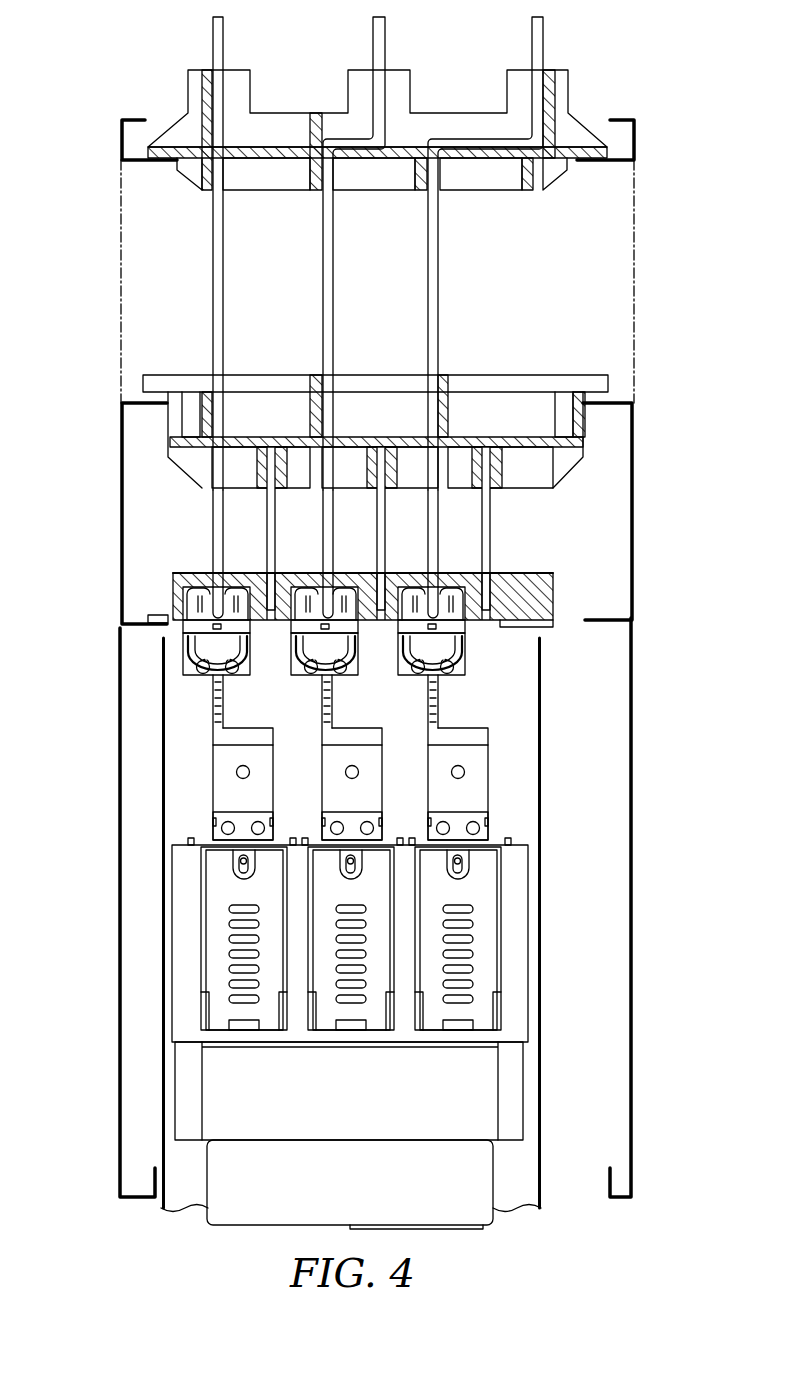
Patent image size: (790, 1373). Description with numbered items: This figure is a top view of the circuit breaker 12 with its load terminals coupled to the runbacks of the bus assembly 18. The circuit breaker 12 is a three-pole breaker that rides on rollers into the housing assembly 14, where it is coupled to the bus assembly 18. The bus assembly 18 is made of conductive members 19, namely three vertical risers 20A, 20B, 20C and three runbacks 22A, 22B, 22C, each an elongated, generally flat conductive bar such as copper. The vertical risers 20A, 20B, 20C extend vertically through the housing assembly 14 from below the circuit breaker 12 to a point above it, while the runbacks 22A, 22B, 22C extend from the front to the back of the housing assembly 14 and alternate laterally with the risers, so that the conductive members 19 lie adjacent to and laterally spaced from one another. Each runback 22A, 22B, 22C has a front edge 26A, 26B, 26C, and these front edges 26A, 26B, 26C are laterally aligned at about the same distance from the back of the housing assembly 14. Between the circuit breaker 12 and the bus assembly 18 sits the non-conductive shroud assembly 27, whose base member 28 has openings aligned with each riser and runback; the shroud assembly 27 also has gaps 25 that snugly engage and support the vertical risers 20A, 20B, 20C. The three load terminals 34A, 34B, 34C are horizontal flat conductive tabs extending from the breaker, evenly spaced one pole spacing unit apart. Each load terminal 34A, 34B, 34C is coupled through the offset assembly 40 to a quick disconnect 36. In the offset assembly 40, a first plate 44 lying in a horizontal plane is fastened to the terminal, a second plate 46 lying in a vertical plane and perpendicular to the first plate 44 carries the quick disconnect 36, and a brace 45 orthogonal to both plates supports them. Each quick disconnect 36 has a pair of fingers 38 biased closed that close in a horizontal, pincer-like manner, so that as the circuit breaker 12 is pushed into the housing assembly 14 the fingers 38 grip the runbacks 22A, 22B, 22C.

The circuit breaker 12 is at (183, 892).
The housing assembly 14 is at (632, 776).
The bus assembly 18 is at (110, 460).
The conductive members 19 is at (221, 286).
The vertical riser 20A is at (264, 500).
The vertical riser 20B is at (374, 500).
The vertical riser 20C is at (488, 538).
The runback 22A is at (213, 511).
The runback 22B is at (323, 528).
The runback 22C is at (429, 530).
The gaps 25 is at (262, 566).
The front edge 26A is at (228, 618).
The front edge 26B is at (324, 613).
The front edge 26C is at (433, 613).
The shroud assembly 27 is at (177, 575).
The base member 28 is at (158, 616).
The load terminal 34A is at (230, 809).
The load terminal 34B is at (359, 816).
The load terminal 34C is at (471, 820).
The quick disconnects 36 is at (188, 672).
The fingers 38 is at (190, 580).
The offset assembly 40 is at (272, 743).
The first plate 44 is at (261, 762).
The brace 45 is at (258, 728).
The second plate 46 is at (212, 702).